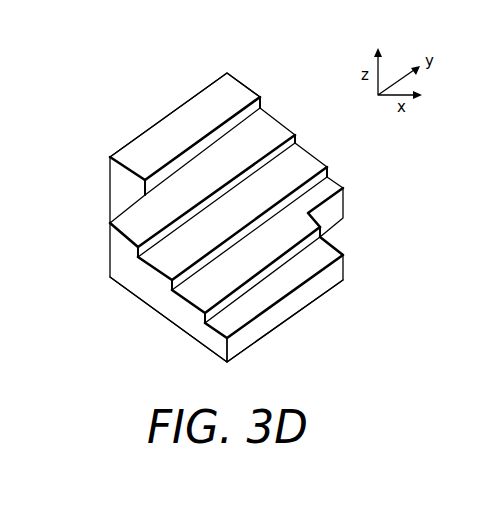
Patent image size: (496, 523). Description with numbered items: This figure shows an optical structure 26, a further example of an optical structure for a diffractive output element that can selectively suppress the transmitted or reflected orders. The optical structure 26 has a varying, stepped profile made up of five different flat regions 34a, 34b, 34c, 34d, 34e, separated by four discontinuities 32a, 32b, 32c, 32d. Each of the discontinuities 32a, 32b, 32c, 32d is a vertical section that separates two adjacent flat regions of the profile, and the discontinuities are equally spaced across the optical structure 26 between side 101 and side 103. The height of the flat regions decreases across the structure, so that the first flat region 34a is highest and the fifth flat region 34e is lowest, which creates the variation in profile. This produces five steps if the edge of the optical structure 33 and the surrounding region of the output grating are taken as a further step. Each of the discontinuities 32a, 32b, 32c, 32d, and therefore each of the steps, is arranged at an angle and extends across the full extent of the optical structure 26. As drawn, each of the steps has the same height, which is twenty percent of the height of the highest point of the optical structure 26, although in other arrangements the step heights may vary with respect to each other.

The side 101 is at (136, 137).
The first flat region 34a is at (189, 122).
The first discontinuity 32a is at (258, 105).
The optical structure 26 is at (282, 122).
The second flat region 34b is at (132, 220).
The second discontinuity 32b is at (297, 141).
The third flat region 34c is at (167, 260).
The third discontinuity 32c is at (341, 186).
The fourth flat region 34d is at (197, 290).
The fourth discontinuity 32d is at (340, 232).
The fifth flat region 34e is at (265, 300).
The edge of the optical structure 33 is at (348, 275).
The side 103 is at (318, 300).